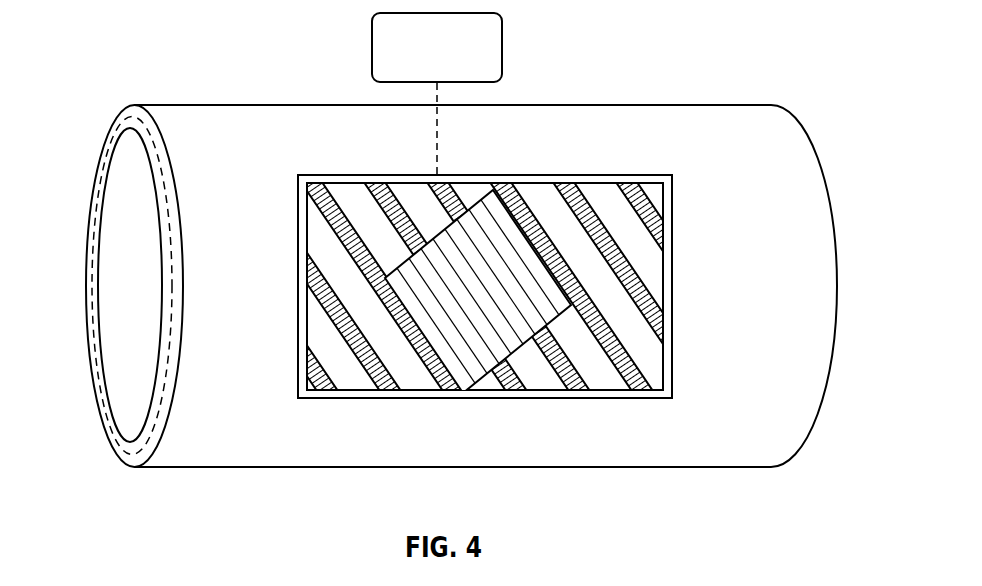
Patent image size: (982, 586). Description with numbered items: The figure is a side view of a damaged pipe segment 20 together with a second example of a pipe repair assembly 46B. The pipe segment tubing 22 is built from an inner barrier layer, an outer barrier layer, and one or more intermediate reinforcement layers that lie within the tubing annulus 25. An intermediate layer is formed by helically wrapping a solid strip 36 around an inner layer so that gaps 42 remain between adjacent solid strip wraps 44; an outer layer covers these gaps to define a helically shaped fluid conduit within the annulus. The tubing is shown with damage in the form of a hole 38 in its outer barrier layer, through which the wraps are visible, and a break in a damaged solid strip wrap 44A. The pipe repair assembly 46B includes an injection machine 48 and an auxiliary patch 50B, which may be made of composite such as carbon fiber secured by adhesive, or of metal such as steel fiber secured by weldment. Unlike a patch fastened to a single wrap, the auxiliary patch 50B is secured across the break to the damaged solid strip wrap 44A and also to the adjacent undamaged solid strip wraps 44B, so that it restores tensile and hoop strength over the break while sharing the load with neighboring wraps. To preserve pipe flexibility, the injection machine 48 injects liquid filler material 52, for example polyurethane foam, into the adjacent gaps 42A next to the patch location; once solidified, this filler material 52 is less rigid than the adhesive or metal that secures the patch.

The pipe segment 20 is at (445, 277).
The pipe segment tubing 22 is at (148, 289).
The tubing annulus 25 is at (114, 459).
The solid strip 36 is at (317, 182).
The hole 38 is at (680, 364).
The gaps 42 is at (311, 277).
The adjacent gaps 42A is at (573, 366).
The solid strip wraps 44 is at (388, 400).
The damaged solid strip wrap 44A is at (577, 400).
The undamaged solid strip wraps 44B is at (360, 172).
The pipe repair assembly 46B is at (624, 41).
The injection machine 48 is at (502, 44).
The auxiliary patch 50B is at (518, 194).
The filler material 52 is at (333, 230).